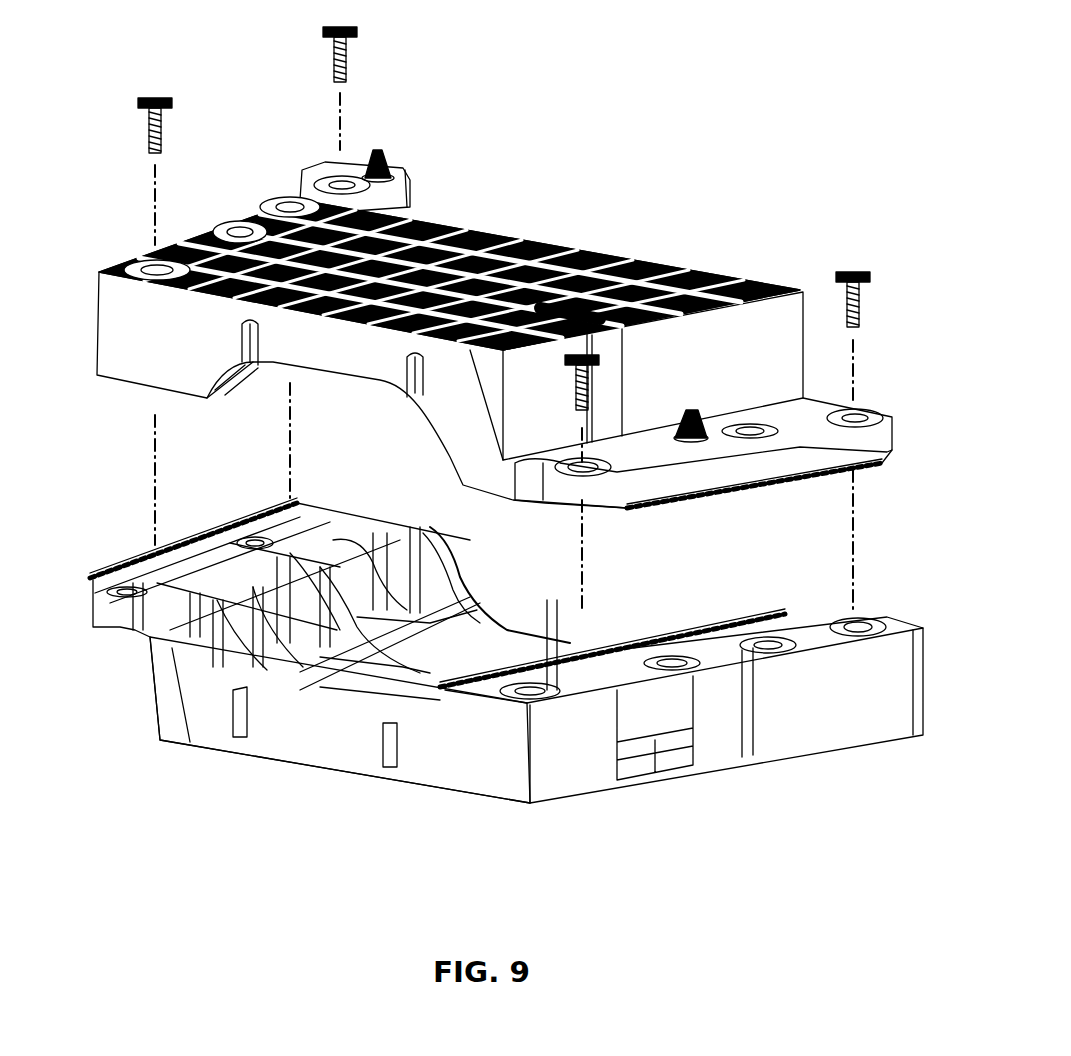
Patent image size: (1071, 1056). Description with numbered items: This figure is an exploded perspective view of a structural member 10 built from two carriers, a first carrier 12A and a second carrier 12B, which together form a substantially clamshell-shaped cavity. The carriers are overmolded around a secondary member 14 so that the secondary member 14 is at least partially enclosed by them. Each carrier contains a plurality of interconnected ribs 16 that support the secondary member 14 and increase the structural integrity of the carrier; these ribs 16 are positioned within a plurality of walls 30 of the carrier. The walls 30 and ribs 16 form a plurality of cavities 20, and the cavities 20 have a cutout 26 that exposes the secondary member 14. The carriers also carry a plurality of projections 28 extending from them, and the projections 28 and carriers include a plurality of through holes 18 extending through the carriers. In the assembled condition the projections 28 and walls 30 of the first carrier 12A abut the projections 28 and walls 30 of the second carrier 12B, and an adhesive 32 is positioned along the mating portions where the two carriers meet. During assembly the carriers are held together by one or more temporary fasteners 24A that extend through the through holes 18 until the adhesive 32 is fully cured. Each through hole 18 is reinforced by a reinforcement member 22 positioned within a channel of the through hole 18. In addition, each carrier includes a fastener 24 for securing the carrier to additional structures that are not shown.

The structural member 10 is at (692, 110).
The first carrier 12A is at (350, 772).
The second carrier 12B is at (513, 235).
The secondary member 14 is at (533, 287).
The interconnected ribs 16 is at (393, 562).
The through holes 18 is at (160, 268).
The cavities 20 is at (314, 650).
The reinforcement member 22 is at (132, 262).
The fastener 24 is at (373, 145).
The temporary fasteners 24A is at (390, 5).
The cutout 26 is at (567, 287).
The projections 28 is at (414, 128).
The walls 30 is at (347, 365).
The adhesive 32 is at (738, 632).